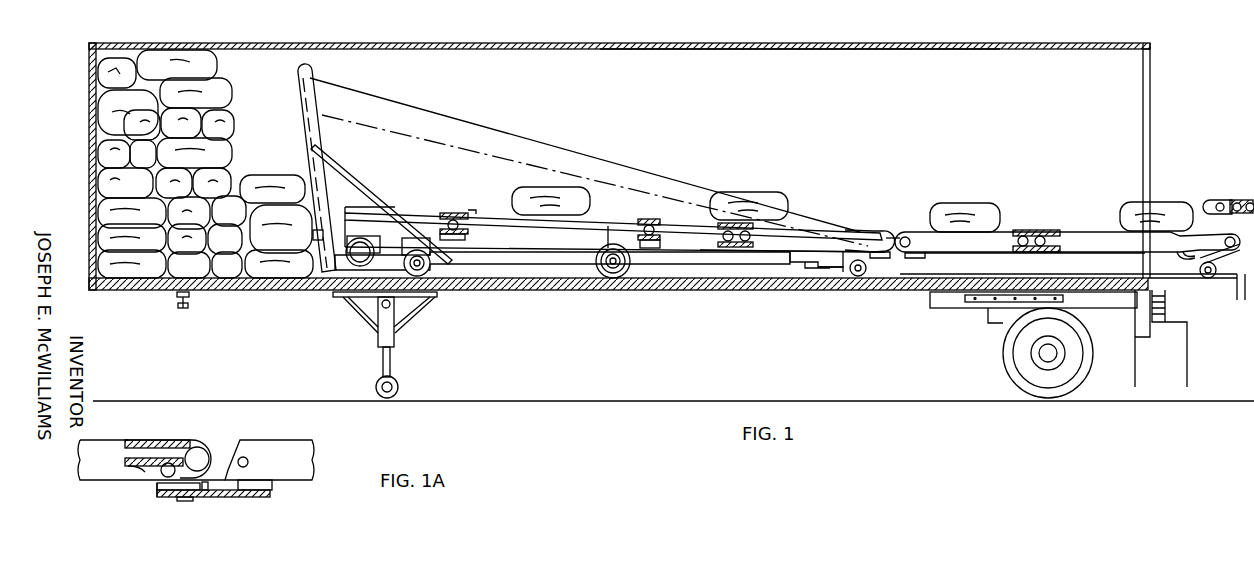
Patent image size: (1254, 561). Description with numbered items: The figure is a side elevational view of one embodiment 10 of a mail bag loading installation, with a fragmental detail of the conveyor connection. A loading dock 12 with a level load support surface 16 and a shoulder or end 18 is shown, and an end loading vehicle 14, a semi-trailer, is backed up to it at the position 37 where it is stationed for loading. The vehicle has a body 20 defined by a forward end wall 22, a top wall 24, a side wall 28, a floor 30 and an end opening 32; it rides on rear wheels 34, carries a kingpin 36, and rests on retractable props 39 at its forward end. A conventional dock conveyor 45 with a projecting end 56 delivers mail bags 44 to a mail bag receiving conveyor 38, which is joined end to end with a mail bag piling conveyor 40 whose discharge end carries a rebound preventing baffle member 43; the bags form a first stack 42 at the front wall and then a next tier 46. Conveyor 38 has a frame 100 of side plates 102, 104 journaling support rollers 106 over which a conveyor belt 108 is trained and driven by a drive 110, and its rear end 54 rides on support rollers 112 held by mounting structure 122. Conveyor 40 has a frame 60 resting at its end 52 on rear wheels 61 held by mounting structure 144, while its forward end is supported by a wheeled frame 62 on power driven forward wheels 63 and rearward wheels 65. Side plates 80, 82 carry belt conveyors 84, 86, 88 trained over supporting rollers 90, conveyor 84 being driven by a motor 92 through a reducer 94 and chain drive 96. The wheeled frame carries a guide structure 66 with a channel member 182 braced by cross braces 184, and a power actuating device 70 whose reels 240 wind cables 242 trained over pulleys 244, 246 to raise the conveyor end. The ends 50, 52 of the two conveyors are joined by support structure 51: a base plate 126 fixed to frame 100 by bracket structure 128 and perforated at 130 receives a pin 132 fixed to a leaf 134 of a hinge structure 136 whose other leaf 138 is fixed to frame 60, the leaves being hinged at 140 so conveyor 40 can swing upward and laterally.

In FIG. 1, the embodiment of the invention 10 is at (1120, 92).
In FIG. 1, the loading dock 12 is at (1198, 378).
In FIG. 1, the end loading vehicle 14 is at (85, 75).
In FIG. 1, the load support surface 16 is at (1240, 272).
In FIG. 1, the shoulder or end 18 is at (1140, 272).
In FIG. 1, the body 20 is at (975, 41).
In FIG. 1, the forward end wall 22 is at (92, 152).
In FIG. 1, the top wall 24 is at (792, 47).
In FIG. 1, the side wall 28 is at (880, 66).
In FIG. 1, the floor 30 is at (758, 270).
In FIG. 1, the end opening 32 is at (1153, 120).
In FIG. 1, the rear wheels 34 is at (1003, 352).
In FIG. 1, the kingpin 36 is at (188, 308).
In FIG. 1, the position 37 is at (1200, 11).
In FIG. 1, the mail bag receiving conveyor 38 is at (1068, 228).
In FIG. 1, the retractable props 39 is at (370, 348).
In FIG. 1, the mail bag piling conveyor 40 is at (820, 190).
In FIG. 1, the first stack 42 is at (137, 283).
In FIG. 1, the baffle member 43 is at (295, 272).
In FIG. 1, the mail bags 44 is at (97, 213).
In FIG. 1, the conveyor 45 is at (92, 128).
In FIG. 1, the tier 46 is at (100, 266).
In FIG. 1, the end of conveyor 40 50 is at (880, 233).
In FIG. 1, the support structure 51 is at (882, 236).
In FIG. 1A, the support structure 51 is at (135, 470).
In FIG. 1, the end of conveyor 38 52 is at (915, 232).
In FIG. 1, the rear end 54 is at (1215, 236).
In FIG. 1, the projecting end 56 is at (1222, 202).
In FIG. 1, the conveyor frame 60 is at (676, 245).
In FIG. 1, the rear wheels 61 is at (858, 277).
In FIG. 1, the wheeled frame 62 is at (545, 283).
In FIG. 1, the forward wheels 63 is at (352, 262).
In FIG. 1, the rearward wheels 65 is at (612, 279).
In FIG. 1, the guide structure 66 is at (355, 124).
In FIG. 1, the power actuating device 70 is at (430, 272).
In FIG. 1, the side plate 80 is at (702, 252).
In FIG. 1A, the side plate 80 is at (151, 460).
In FIG. 1, the side plate 82 is at (730, 250).
In FIG. 1, the belt conveyor 84 is at (840, 230).
In FIG. 1, the belt conveyor 86 is at (660, 248).
In FIG. 1, the belt conveyor 88 is at (470, 214).
In FIG. 1, the supporting rollers 90 is at (652, 226).
In FIG. 1, the motor 92 is at (808, 268).
In FIG. 1, the reducer 94 is at (822, 270).
In FIG. 1, the chain drive 96 is at (836, 276).
In FIG. 1, the frame 100 is at (1097, 236).
In FIG. 1A, the frame 100 is at (300, 445).
In FIG. 1, the side plate 102 is at (990, 246).
In FIG. 1, the side plate 104 is at (1034, 250).
In FIG. 1, the support rollers 106 is at (1023, 230).
In FIG. 1, the conveyor belt 108 is at (1042, 200).
In FIG. 1, the drive 110 is at (1195, 268).
In FIG. 1, the support rollers 112 is at (1212, 282).
In FIG. 1, the mounting structure 122 is at (1250, 312).
In FIG. 1, the base plate 126 is at (905, 254).
In FIG. 1A, the base plate 126 is at (275, 497).
In FIG. 1A, the bracket structure 128 is at (263, 480).
In FIG. 1A, the perforation 130 is at (160, 496).
In FIG. 1A, the pin 132 is at (190, 502).
In FIG. 1A, the leaf 134 is at (160, 490).
In FIG. 1A, the hinge structure 136 is at (185, 447).
In FIG. 1A, the leaf 138 is at (158, 445).
In FIG. 1A, the hinge pivot 140 is at (212, 475).
In FIG. 1, the mounting structure 144 is at (882, 270).
In FIG. 1, the channel member 182 is at (330, 140).
In FIG. 1, the cross braces 184 is at (372, 196).
In FIG. 1, the reels 240 is at (425, 270).
In FIG. 1, the cables 242 is at (412, 300).
In FIG. 1, the pulley 244 is at (320, 272).
In FIG. 1, the pulley 246 is at (318, 66).